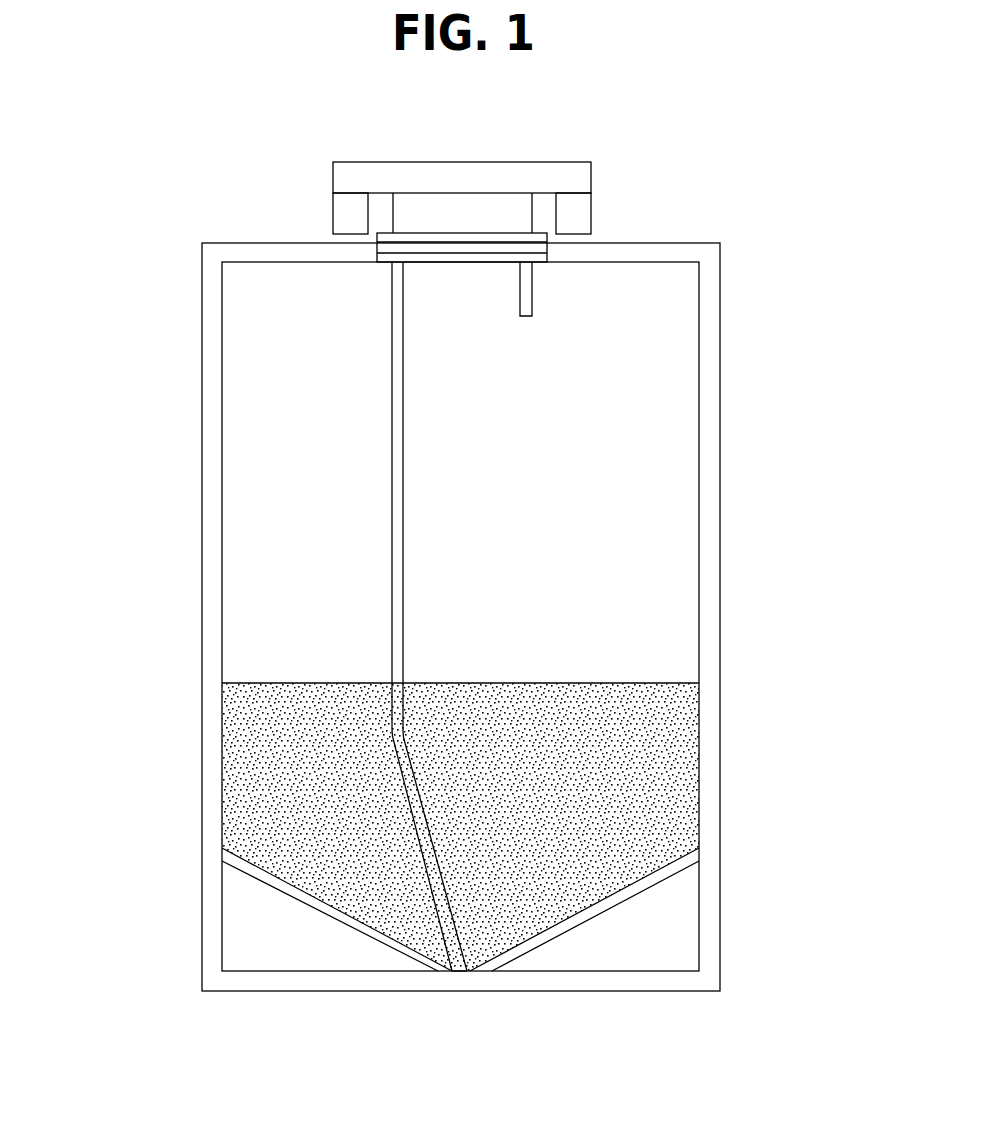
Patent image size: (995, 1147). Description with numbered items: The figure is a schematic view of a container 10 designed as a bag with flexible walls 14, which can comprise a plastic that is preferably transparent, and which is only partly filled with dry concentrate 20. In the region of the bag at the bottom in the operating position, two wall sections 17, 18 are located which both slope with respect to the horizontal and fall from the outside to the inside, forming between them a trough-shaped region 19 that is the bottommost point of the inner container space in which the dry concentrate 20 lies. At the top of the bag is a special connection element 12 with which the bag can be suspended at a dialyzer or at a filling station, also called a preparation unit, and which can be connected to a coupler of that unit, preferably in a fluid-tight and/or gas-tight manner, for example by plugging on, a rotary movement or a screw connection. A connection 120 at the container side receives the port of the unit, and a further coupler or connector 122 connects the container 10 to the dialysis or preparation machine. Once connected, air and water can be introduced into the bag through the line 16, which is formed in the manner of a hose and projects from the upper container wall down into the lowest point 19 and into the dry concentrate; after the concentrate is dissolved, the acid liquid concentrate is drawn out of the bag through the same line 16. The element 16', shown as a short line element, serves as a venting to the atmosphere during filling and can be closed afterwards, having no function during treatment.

The container 10 is at (145, 303).
The connection element 12 is at (459, 168).
The connection at the container side 120 is at (343, 215).
The coupler 122 is at (580, 215).
The flexible walls 14 is at (680, 243).
The line 16 is at (437, 616).
The venting 16' is at (568, 294).
The wall section 17 is at (352, 925).
The wall section 18 is at (570, 922).
The trough-shaped region 19 is at (445, 945).
The dry concentrate 20 is at (537, 690).